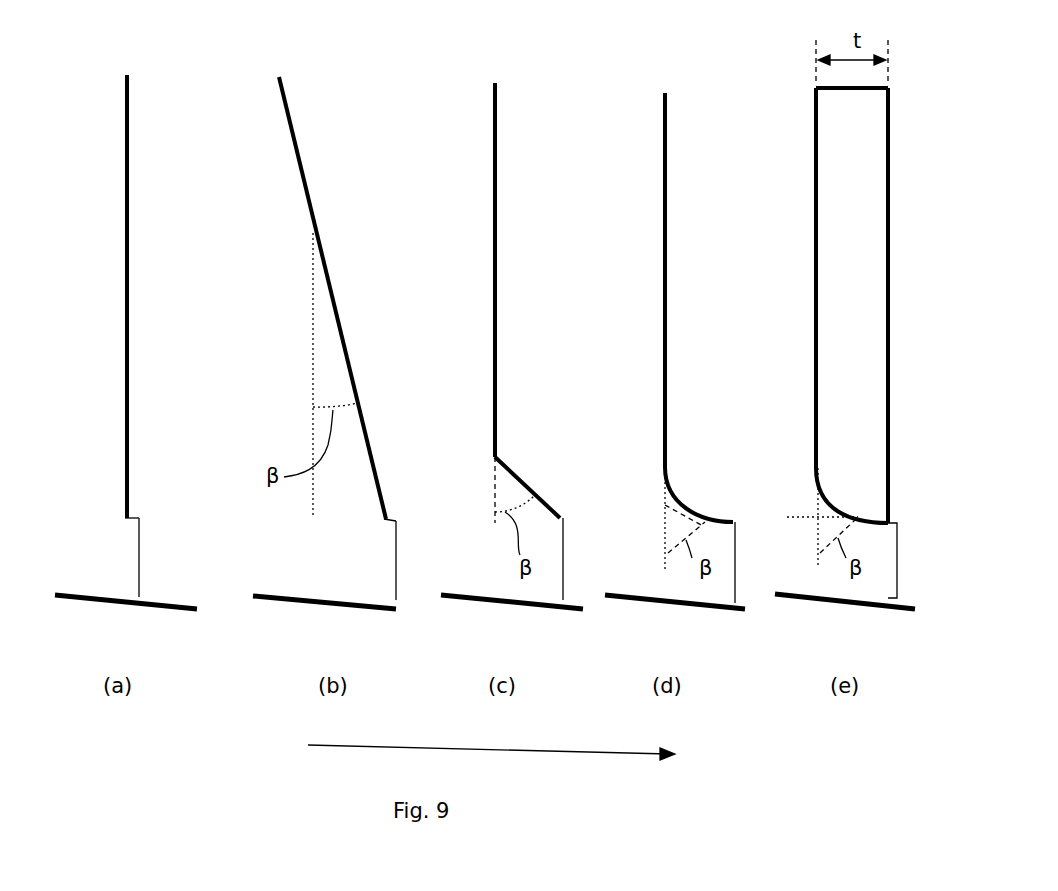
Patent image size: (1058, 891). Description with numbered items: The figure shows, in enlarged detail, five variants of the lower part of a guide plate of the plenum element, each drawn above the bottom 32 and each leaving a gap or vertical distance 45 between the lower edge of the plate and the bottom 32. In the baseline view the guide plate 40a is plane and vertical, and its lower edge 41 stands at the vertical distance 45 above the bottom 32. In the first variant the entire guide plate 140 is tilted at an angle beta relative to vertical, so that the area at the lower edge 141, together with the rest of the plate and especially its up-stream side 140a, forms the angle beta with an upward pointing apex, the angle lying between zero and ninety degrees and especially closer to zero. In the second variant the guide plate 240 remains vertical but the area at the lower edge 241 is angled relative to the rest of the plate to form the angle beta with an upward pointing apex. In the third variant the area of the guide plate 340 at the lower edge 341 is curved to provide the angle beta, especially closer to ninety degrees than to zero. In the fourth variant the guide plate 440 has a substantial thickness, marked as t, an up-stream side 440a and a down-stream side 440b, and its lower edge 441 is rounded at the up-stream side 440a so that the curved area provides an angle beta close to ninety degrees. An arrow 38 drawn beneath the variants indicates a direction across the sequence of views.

The guide plate 40a is at (126, 258).
The lower edge 41 is at (130, 518).
The gap or vertical distance 45 is at (139, 560).
The bottom 32 is at (103, 604).
The guide plate 140 is at (316, 195).
The up-stream side 140a is at (352, 388).
The lower edge 141 is at (388, 520).
The guide plate 240 is at (492, 290).
The lower edge 241 is at (561, 519).
The guide plate 340 is at (662, 305).
The lower edge 341 is at (735, 520).
The guide plate 440 is at (815, 272).
The up-stream side 440a is at (815, 413).
The down-stream side 440b is at (890, 392).
The lower edge 441 is at (890, 522).
The direction of movement 38 is at (440, 748).